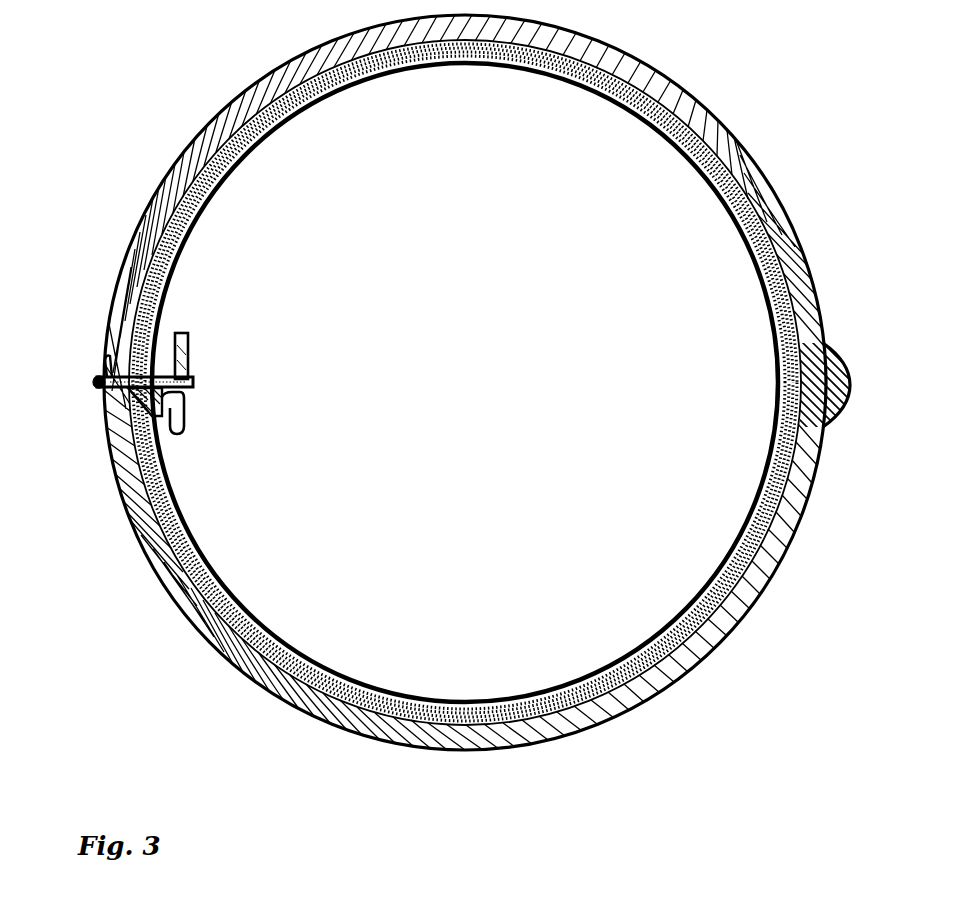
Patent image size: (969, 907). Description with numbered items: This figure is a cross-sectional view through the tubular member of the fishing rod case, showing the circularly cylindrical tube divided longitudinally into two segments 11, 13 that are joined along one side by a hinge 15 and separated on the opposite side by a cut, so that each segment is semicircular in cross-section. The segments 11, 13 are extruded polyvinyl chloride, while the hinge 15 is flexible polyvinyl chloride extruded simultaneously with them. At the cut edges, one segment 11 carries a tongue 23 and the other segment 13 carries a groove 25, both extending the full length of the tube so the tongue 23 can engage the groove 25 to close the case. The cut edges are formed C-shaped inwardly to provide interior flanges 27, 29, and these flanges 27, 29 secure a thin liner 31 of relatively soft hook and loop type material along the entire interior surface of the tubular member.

The segment 11 is at (738, 158).
The segment 13 is at (775, 575).
The hinge 15 is at (846, 382).
The tongue 23 is at (130, 356).
The groove 25 is at (123, 413).
The interior flange 27 is at (192, 353).
The interior flange 29 is at (184, 422).
The liner 31 is at (278, 642).